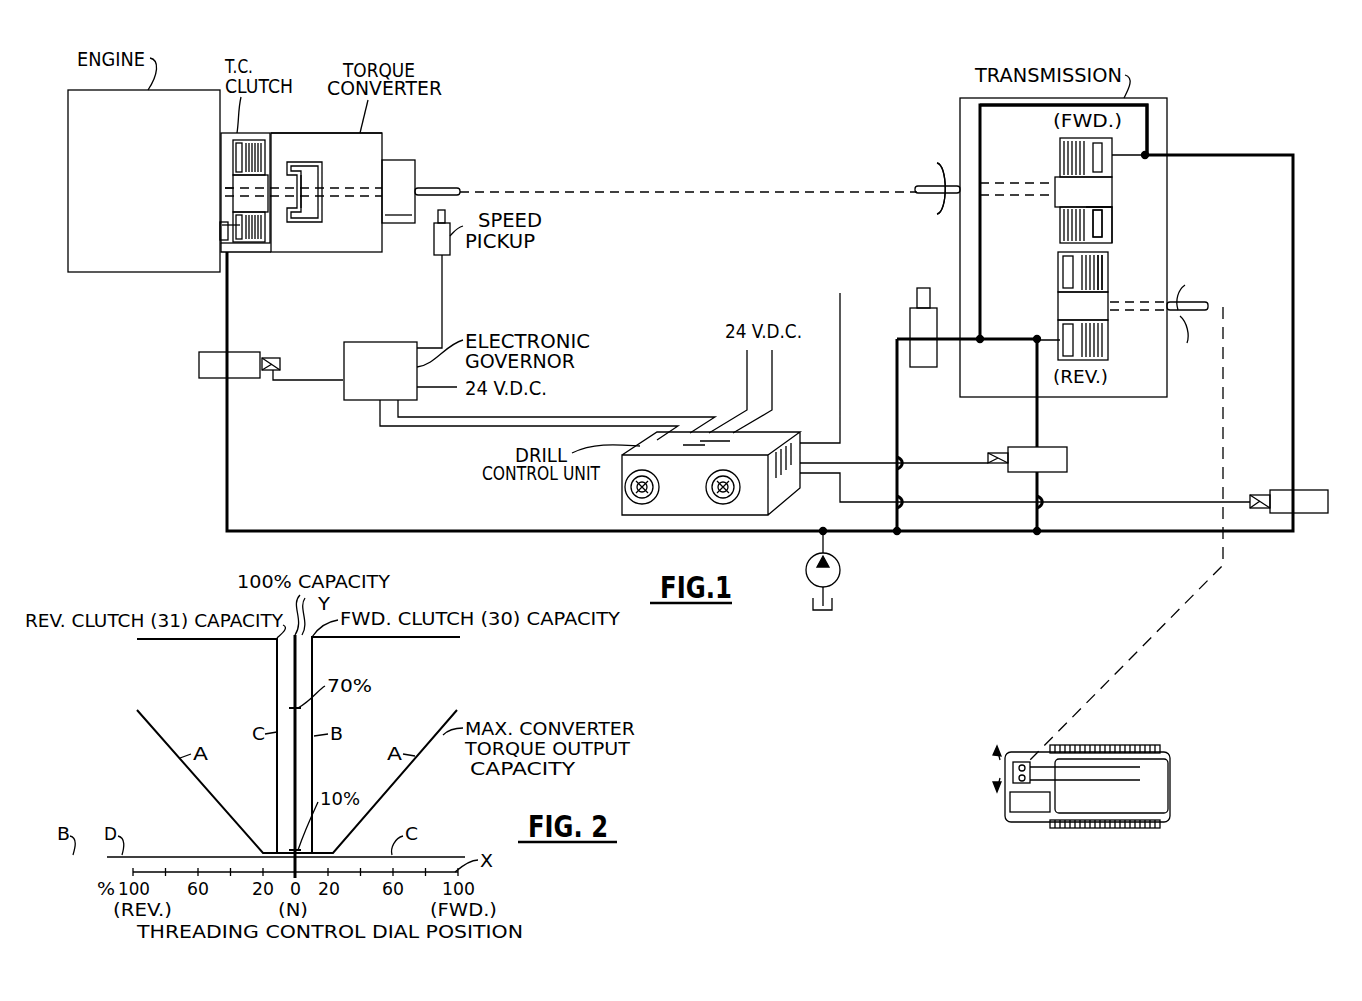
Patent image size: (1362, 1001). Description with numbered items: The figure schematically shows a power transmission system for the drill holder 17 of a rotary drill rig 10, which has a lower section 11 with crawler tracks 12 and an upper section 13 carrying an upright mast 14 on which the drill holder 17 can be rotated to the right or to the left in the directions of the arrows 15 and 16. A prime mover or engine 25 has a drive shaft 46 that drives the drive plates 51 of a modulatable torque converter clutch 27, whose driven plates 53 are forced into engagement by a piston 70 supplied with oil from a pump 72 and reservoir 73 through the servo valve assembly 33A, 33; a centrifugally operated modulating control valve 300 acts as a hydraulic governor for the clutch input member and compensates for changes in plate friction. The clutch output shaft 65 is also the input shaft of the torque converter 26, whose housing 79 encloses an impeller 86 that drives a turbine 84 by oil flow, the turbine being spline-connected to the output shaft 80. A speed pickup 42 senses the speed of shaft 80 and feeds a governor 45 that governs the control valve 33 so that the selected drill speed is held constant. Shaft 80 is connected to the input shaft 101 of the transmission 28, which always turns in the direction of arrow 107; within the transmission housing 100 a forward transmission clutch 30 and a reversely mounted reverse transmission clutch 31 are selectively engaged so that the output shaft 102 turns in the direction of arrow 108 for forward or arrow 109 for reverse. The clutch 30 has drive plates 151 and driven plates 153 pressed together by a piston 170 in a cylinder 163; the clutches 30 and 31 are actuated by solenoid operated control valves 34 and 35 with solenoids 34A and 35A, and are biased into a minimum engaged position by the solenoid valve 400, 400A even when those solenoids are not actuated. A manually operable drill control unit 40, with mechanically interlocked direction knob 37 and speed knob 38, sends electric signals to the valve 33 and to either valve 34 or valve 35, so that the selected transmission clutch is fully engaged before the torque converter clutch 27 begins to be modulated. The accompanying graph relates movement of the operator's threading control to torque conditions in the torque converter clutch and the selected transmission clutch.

The engine 25 is at (148, 272).
The torque converter 26 is at (385, 147).
The torque converter clutch 27 is at (242, 253).
The transmission 28 is at (1168, 99).
The forward transmission clutch 30 is at (1055, 155).
The reverse transmission clutch 31 is at (1058, 292).
The torque converter clutch control valve 33 is at (240, 351).
The servo valve 33A is at (274, 357).
The forward clutch control valve 34 is at (1318, 490).
The solenoid 34A is at (1258, 494).
The reverse clutch control valve 35 is at (1050, 447).
The solenoid 35A is at (996, 452).
The direction control knob 37 is at (628, 500).
The speed control knob 38 is at (735, 492).
The drill control unit 40 is at (783, 437).
The speed pickup 42 is at (450, 255).
The governor 45 is at (380, 342).
The engine drive shaft 46 is at (228, 190).
The drive plates 51 is at (260, 243).
The driven plates 53 is at (255, 150).
The shaft 65 is at (270, 178).
The piston 70 is at (240, 225).
The pump 72 is at (841, 573).
The reservoir 73 is at (835, 606).
The housing 79 is at (382, 134).
The torque converter output shaft 80 is at (423, 188).
The turbine 84 is at (322, 180).
The impeller 86 is at (302, 176).
The transmission housing 100 is at (1167, 136).
The transmission input shaft 101 is at (930, 180).
The transmission output shaft 102 is at (1195, 302).
The arrow 107 is at (934, 200).
The arrow 108 is at (1185, 285).
The arrow 109 is at (1187, 345).
The drive plates 151 is at (1100, 262).
The driven plates 153 is at (1104, 282).
The cylinder 163 is at (1112, 221).
The piston 170 is at (1100, 214).
The centrifugally operated modulating control valve 300 is at (222, 232).
The solenoid valve 400 is at (910, 321).
The solenoid valve 400A is at (917, 290).
The rotary drill rig 10 is at (1172, 790).
The lower section 11 is at (1166, 761).
The crawler tracks 12 is at (1150, 745).
The upper section 13 is at (1088, 765).
The upright mast 14 is at (1020, 762).
The arrow 15 is at (995, 760).
The arrow 16 is at (995, 778).
The drill holder 17 is at (1013, 767).